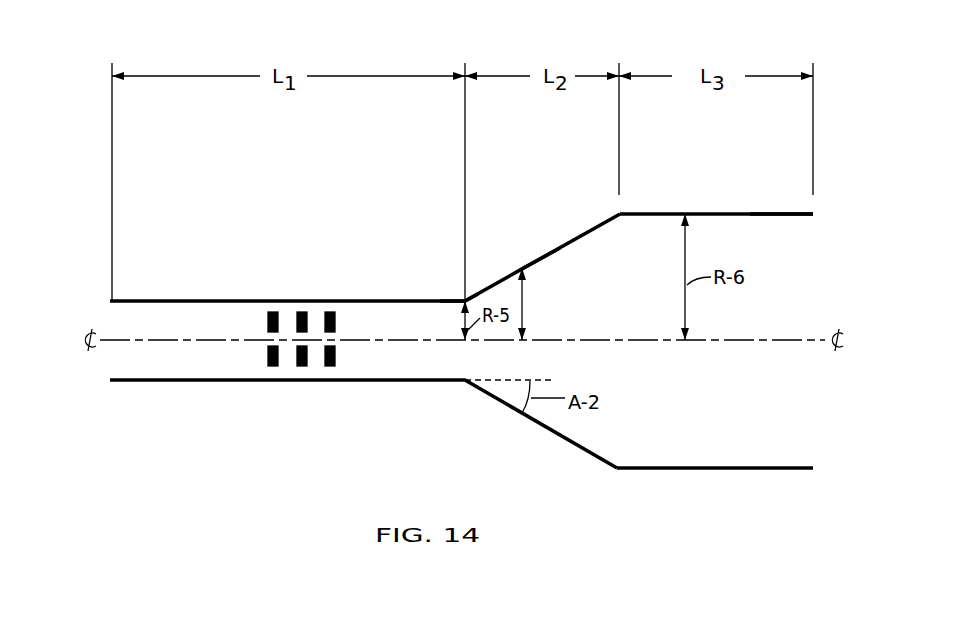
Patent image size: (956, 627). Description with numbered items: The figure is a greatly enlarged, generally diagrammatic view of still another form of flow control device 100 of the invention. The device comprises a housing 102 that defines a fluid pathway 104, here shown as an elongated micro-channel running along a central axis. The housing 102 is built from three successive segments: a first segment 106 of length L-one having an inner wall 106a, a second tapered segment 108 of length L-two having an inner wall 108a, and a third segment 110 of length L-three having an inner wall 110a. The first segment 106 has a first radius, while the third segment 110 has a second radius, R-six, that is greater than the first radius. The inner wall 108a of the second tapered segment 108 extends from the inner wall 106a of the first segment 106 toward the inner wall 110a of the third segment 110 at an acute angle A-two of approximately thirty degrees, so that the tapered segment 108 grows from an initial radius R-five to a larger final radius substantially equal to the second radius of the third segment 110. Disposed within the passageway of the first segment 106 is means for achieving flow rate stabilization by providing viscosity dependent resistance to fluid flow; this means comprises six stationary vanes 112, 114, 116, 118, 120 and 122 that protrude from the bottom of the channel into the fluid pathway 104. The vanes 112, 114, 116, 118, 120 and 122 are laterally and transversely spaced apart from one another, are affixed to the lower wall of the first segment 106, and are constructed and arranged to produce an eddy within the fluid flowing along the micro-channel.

The flow control device 100 is at (527, 438).
The housing 102 is at (645, 470).
The fluid pathway 104 is at (155, 340).
The first segment 106 is at (261, 300).
The inner wall of first segment 106a is at (394, 302).
The second tapered segment 108 is at (540, 258).
The inner wall of second tapered segment 108a is at (536, 262).
The third segment 110 is at (745, 214).
The inner wall of third segment 110a is at (773, 216).
The stationary vane 112 is at (268, 322).
The stationary vane 114 is at (268, 357).
The stationary vane 116 is at (302, 312).
The stationary vane 118 is at (302, 366).
The stationary vane 120 is at (336, 331).
The stationary vane 122 is at (336, 356).